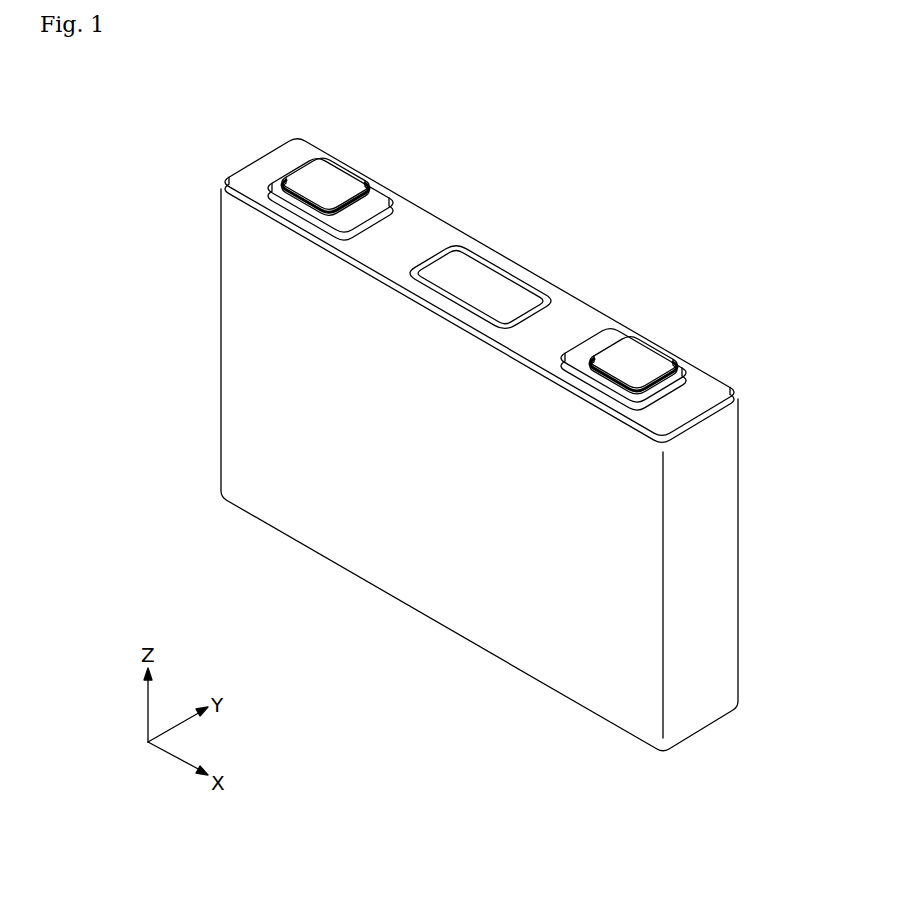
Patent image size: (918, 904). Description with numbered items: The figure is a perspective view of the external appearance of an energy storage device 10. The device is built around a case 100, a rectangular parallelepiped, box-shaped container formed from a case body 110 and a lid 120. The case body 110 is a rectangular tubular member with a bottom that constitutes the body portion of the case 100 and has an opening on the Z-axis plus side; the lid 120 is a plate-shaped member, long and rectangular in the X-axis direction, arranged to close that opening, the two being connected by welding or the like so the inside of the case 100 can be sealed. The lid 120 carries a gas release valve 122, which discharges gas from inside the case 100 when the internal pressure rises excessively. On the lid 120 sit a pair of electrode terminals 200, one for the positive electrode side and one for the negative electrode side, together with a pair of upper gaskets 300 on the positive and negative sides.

The energy storage device 10 is at (633, 140).
The case 100 is at (110, 170).
The case body 110 is at (243, 276).
The lid 120 is at (257, 170).
The gas release valve 122 is at (487, 282).
The electrode terminals 200 is at (336, 174).
The upper gaskets 300 is at (382, 192).